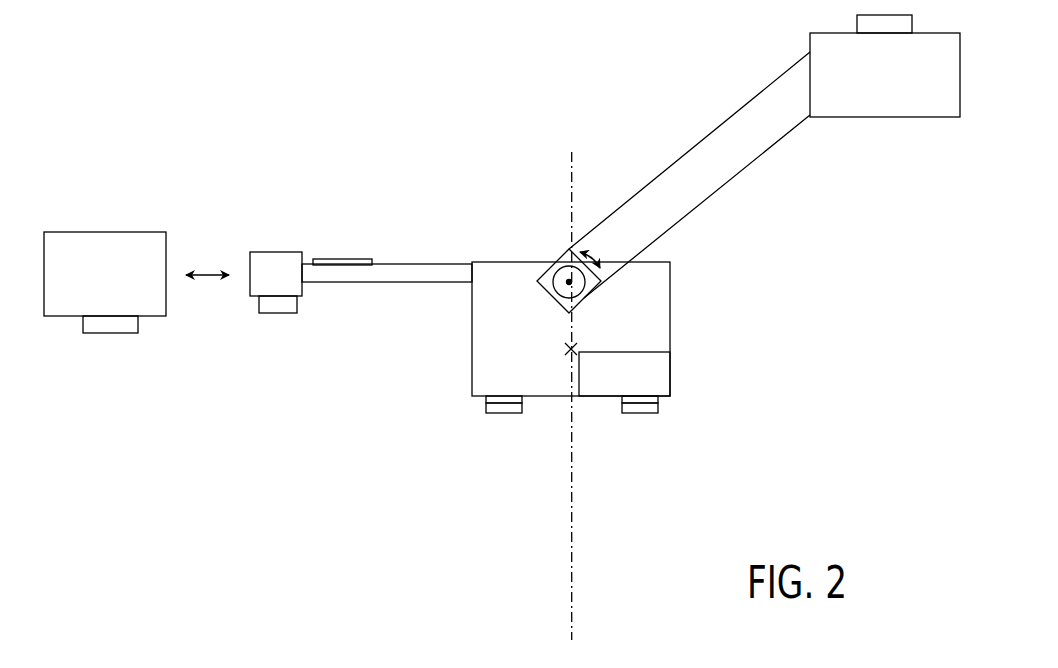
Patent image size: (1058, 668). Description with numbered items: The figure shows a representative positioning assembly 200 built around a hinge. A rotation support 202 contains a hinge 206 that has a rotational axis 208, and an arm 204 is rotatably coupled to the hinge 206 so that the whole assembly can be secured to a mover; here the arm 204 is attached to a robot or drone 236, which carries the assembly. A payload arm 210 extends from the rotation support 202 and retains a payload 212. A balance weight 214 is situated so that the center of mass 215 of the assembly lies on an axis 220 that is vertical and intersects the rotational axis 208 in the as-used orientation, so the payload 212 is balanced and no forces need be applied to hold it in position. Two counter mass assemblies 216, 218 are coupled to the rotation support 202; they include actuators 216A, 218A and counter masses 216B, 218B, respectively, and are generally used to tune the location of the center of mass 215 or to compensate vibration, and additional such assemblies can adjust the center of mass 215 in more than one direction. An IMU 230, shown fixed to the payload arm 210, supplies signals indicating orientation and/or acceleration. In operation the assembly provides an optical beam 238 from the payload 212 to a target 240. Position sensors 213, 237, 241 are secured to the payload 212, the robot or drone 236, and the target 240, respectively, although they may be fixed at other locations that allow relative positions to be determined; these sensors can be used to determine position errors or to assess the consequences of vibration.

The positioning assembly 200 is at (398, 550).
The rotation support 202 is at (525, 377).
The arm 204 is at (725, 182).
The hinge 206 is at (583, 298).
The rotational axis 208 is at (568, 282).
The payload arm 210 is at (368, 284).
The payload 212 is at (278, 250).
The position sensor 213 is at (277, 315).
The balance weight 214 is at (637, 384).
The center of mass 215 is at (571, 349).
The counter mass assembly 216 is at (682, 436).
The actuator 216A is at (660, 402).
The counter mass 216B is at (640, 413).
The counter mass assembly 218 is at (454, 450).
The actuator 218A is at (486, 401).
The counter mass 218B is at (513, 413).
The axis 220 is at (572, 548).
The IMU 230 is at (342, 260).
The robot or drone 236 is at (877, 117).
The position sensor 237 is at (857, 22).
The optical beam 238 is at (207, 278).
The target 240 is at (137, 233).
The position sensor 241 is at (107, 333).